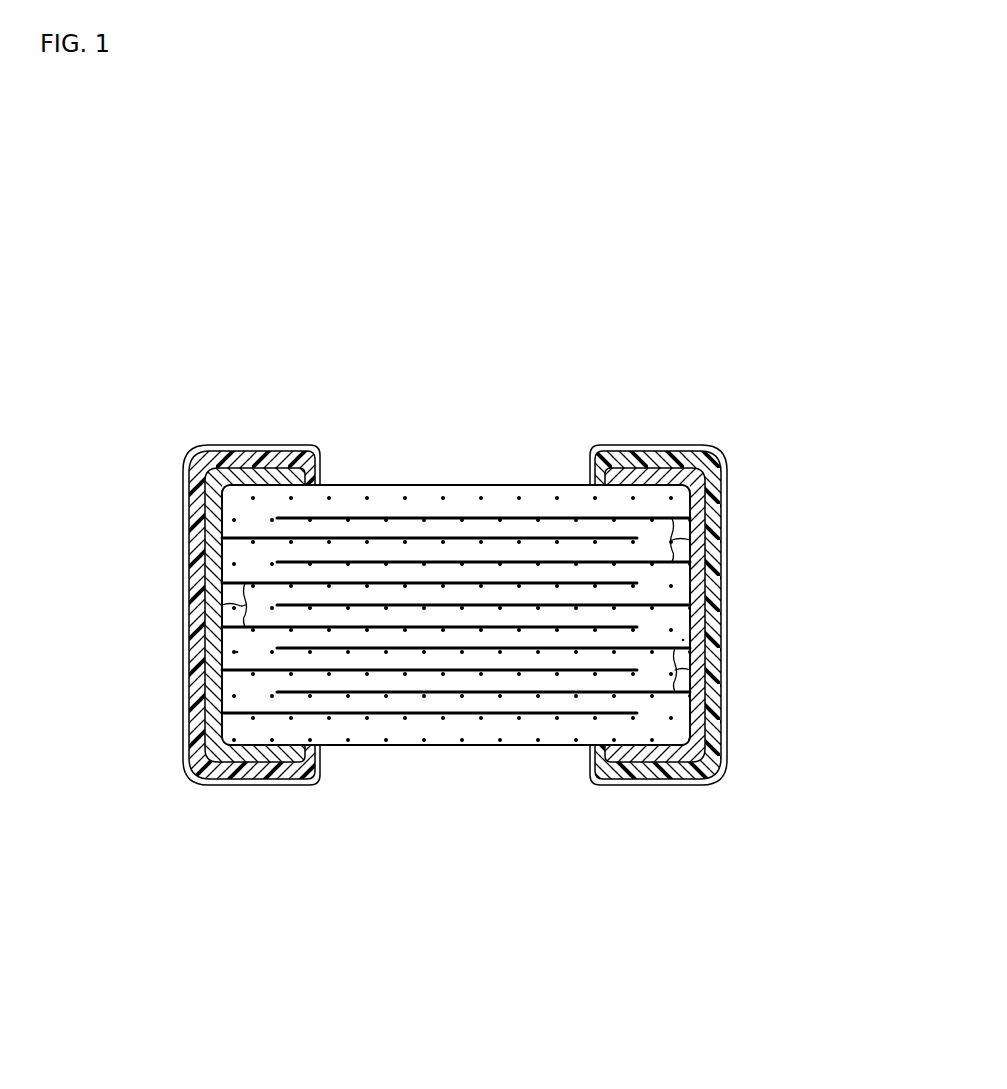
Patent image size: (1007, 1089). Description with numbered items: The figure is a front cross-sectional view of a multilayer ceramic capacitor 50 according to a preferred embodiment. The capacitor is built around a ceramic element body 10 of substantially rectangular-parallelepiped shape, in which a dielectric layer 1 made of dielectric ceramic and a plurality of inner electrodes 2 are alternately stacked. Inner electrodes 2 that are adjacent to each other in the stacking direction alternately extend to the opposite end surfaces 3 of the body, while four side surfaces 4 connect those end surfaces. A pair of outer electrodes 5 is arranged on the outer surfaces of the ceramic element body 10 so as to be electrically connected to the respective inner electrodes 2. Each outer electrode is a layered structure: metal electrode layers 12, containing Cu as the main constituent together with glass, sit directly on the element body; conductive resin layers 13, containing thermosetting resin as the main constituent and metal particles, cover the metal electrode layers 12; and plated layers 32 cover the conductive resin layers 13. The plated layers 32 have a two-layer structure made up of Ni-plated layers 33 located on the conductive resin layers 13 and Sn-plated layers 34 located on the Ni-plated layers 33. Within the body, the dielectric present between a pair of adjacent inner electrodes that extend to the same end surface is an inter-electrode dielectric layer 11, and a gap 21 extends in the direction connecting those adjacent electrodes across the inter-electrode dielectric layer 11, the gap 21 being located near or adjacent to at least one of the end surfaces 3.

The dielectric layer 1 is at (388, 702).
The inner electrodes 2 is at (390, 585).
The end surfaces 3 is at (212, 500).
The side surfaces 4 is at (510, 484).
The outer electrodes 5 is at (452, 615).
The ceramic element body 10 is at (452, 584).
The inter-electrode dielectric layer 11 is at (227, 668).
The metal electrode layers 12 is at (190, 536).
The conductive resin layers 13 is at (190, 575).
The gap 21 is at (232, 606).
The plated layers 32 is at (457, 689).
The Ni-plated layers 33 is at (207, 786).
The Sn-plated layers 34 is at (268, 786).
The multilayer ceramic capacitor 50 is at (613, 256).